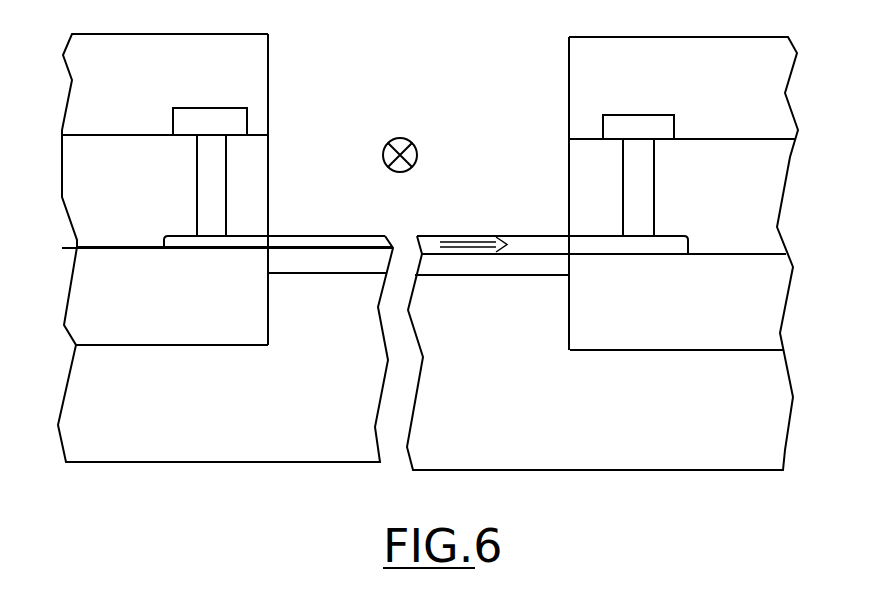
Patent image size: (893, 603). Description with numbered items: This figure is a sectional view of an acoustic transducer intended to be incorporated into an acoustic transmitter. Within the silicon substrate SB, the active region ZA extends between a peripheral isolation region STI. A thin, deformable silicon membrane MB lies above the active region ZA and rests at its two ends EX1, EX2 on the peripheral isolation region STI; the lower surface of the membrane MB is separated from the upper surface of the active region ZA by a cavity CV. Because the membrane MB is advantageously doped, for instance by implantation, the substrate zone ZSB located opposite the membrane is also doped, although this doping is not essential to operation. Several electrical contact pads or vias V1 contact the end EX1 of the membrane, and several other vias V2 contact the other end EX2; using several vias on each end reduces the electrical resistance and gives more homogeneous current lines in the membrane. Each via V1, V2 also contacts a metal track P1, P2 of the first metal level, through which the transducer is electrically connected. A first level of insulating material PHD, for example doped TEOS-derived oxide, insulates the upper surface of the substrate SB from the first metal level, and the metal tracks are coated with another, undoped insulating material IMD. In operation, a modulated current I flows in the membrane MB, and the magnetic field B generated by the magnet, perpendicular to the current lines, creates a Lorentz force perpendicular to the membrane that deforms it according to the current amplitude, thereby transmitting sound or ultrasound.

The insulating material IMD is at (252, 62).
The metal track P1 is at (199, 114).
The metal track P2 is at (642, 125).
The insulating material PHD is at (257, 160).
The vias V1 is at (208, 180).
The vias V2 is at (640, 170).
The end of the membrane EX1 is at (182, 240).
The end of the membrane EX2 is at (675, 250).
The membrane MB is at (300, 243).
The peripheral isolation region STI is at (155, 320).
The active region ZA is at (332, 322).
The substrate zone ZSB is at (457, 290).
The cavity CV is at (530, 265).
The silicon substrate SB is at (670, 442).
The magnetic field B is at (446, 137).
The current I is at (477, 205).